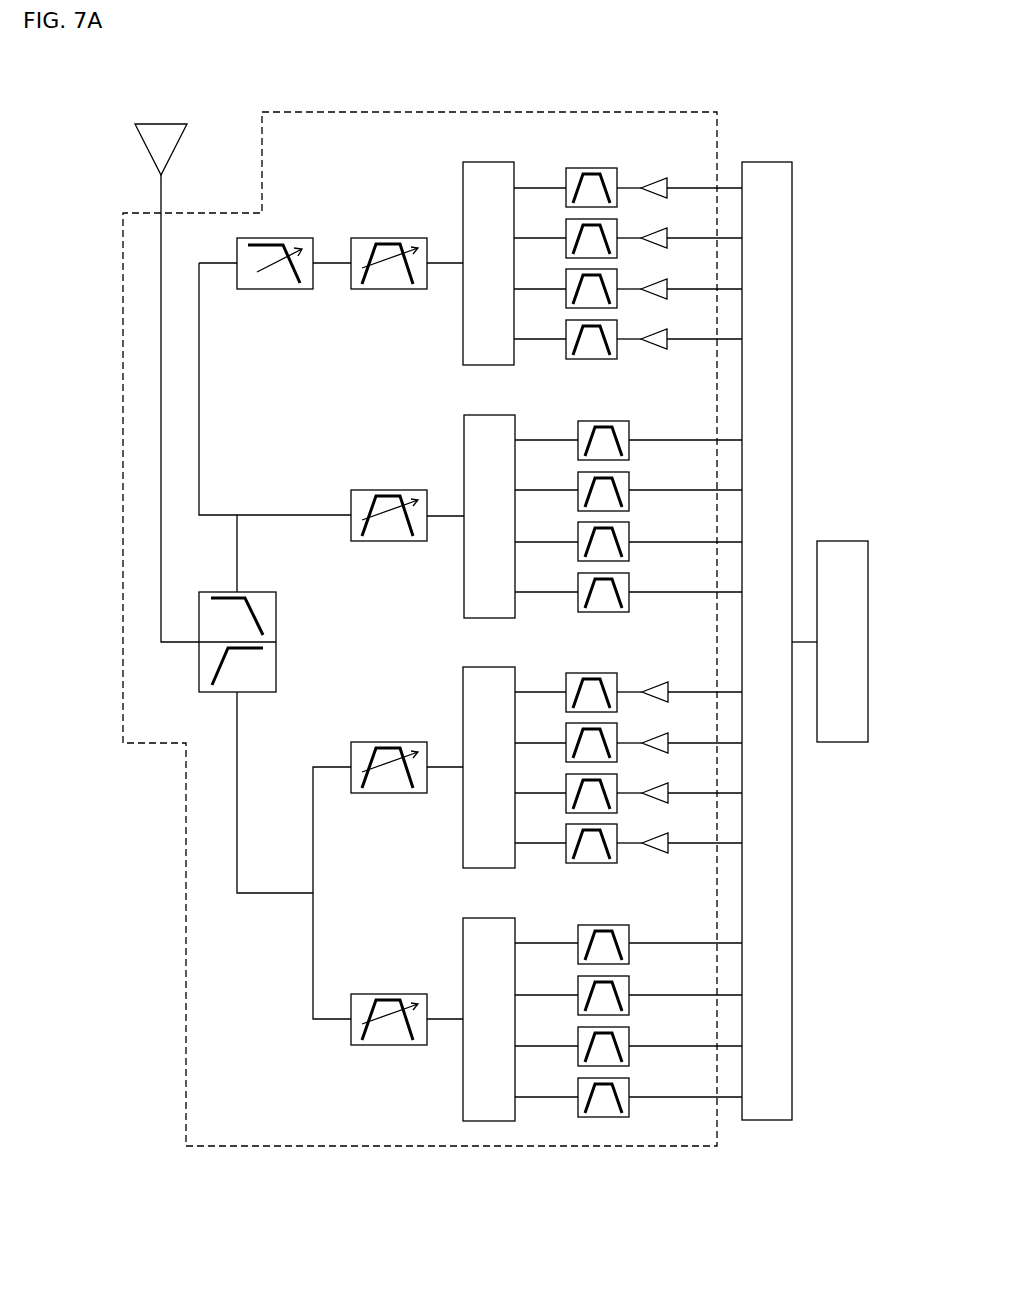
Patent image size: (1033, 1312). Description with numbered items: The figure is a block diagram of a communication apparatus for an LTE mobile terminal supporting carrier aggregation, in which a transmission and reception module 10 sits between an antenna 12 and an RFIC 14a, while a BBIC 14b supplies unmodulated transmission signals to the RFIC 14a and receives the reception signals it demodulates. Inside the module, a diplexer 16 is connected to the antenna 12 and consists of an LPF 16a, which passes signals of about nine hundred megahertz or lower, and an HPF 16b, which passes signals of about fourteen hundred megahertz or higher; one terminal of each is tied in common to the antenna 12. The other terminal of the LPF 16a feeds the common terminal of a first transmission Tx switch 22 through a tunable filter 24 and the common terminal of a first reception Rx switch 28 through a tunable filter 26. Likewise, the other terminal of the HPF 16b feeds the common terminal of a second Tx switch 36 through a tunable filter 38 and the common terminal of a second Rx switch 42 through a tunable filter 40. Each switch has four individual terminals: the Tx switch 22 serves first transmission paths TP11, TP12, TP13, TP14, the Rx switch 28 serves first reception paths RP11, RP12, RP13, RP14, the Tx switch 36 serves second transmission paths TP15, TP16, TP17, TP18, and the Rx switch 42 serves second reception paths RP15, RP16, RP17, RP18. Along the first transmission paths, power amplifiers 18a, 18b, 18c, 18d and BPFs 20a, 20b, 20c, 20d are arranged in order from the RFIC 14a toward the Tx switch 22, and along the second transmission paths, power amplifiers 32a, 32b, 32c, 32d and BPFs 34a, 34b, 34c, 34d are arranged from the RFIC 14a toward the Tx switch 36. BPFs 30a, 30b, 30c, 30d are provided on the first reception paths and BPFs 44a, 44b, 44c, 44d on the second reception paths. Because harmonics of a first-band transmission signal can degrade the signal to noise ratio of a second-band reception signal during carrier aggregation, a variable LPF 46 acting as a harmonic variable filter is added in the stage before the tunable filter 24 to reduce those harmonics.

The transmission and reception module 10 is at (420, 629).
The antenna 12 is at (165, 122).
The RFIC 14a is at (772, 161).
The BBIC 14b is at (845, 540).
The diplexer 16 is at (257, 608).
The LPF (first filter element) 16a is at (276, 608).
The HPF (second filter element) 16b is at (276, 668).
The power amplifier 18a is at (656, 179).
The power amplifier 18b is at (656, 229).
The power amplifier 18c is at (656, 280).
The power amplifier 18d is at (656, 330).
The BPF 20a is at (566, 178).
The BPF 20b is at (566, 228).
The BPF 20c is at (566, 278).
The BPF 20d is at (566, 328).
The Tx switch (first transmission switch) 22 is at (463, 180).
The tunable filter (transmission variable filter) 24 is at (378, 237).
The tunable filter 26 is at (380, 489).
The Rx switch (first reception switch) 28 is at (464, 433).
The BPF 30a is at (578, 430).
The BPF 30b is at (578, 481).
The BPF 30c is at (578, 531).
The BPF 30d is at (578, 582).
The power amplifier 32a is at (656, 684).
The power amplifier 32b is at (656, 734).
The power amplifier 32c is at (656, 785).
The power amplifier 32d is at (656, 835).
The BPF 34a is at (566, 683).
The BPF 34b is at (566, 733).
The BPF 34c is at (566, 784).
The BPF 34d is at (566, 834).
The Tx switch (second transmission switch) 36 is at (463, 685).
The tunable filter 38 is at (378, 741).
The tunable filter 40 is at (378, 993).
The Rx switch (second reception switch) 42 is at (463, 938).
The BPF 44a is at (578, 935).
The BPF 44b is at (578, 986).
The BPF 44c is at (578, 1037).
The BPF 44d is at (578, 1088).
The variable LPF (harmonic variable filter) 46 is at (283, 290).
The transmission path (first transmission path) TP11 is at (686, 186).
The transmission path (first transmission path) TP12 is at (686, 236).
The transmission path (first transmission path) TP13 is at (686, 287).
The transmission path (first transmission path) TP14 is at (686, 337).
The transmission path (second transmission path) TP15 is at (686, 690).
The transmission path (second transmission path) TP16 is at (686, 741).
The transmission path (second transmission path) TP17 is at (686, 791).
The transmission path (second transmission path) TP18 is at (686, 841).
The reception path (first reception path) RP11 is at (666, 438).
The reception path (first reception path) RP12 is at (666, 488).
The reception path (first reception path) RP13 is at (666, 540).
The reception path (first reception path) RP14 is at (666, 590).
The reception path (second reception path) RP15 is at (666, 941).
The reception path (second reception path) RP16 is at (666, 993).
The reception path (second reception path) RP17 is at (666, 1044).
The reception path (second reception path) RP18 is at (666, 1095).